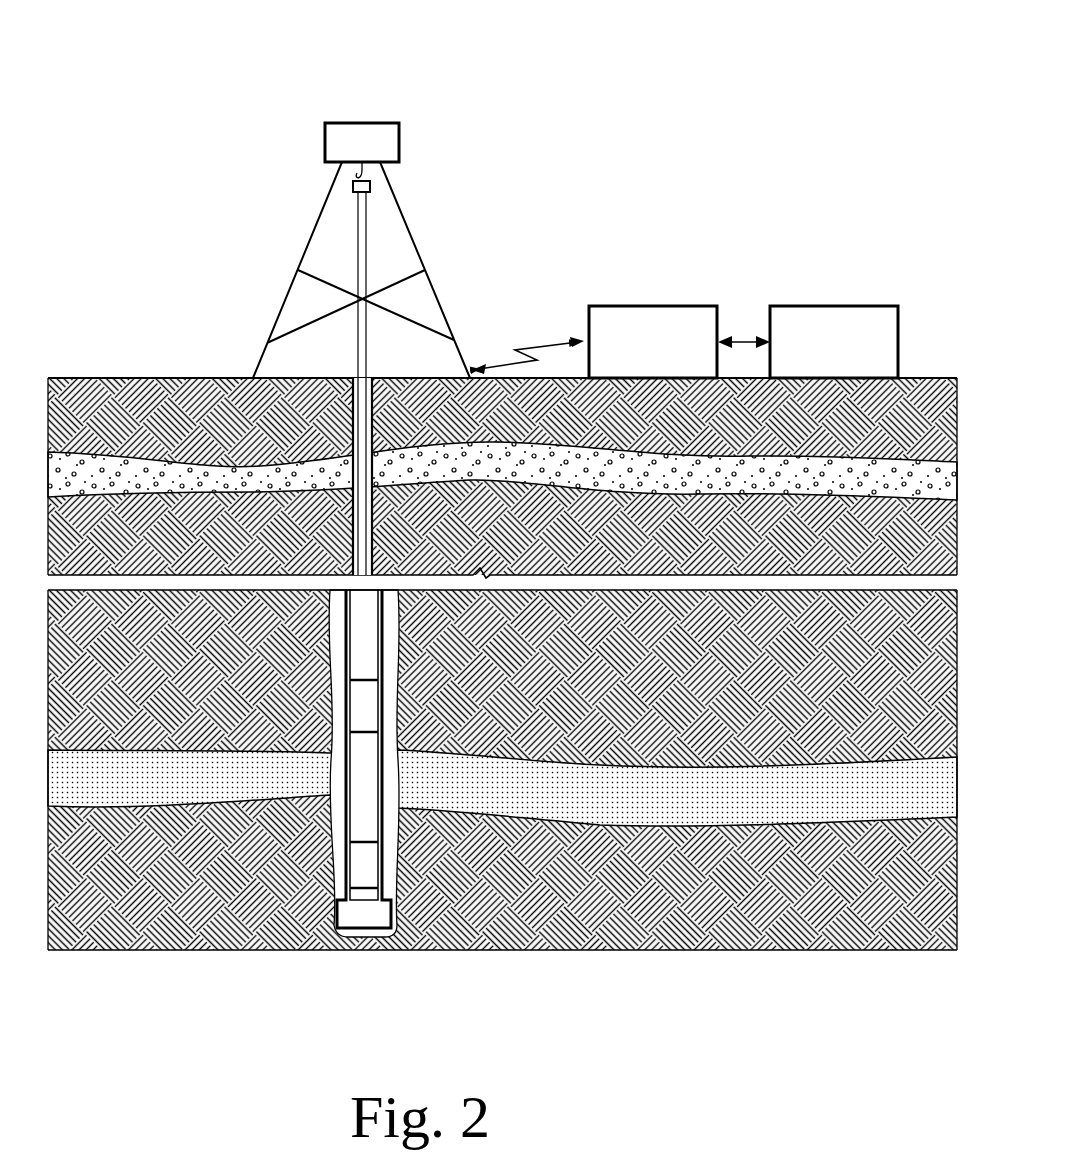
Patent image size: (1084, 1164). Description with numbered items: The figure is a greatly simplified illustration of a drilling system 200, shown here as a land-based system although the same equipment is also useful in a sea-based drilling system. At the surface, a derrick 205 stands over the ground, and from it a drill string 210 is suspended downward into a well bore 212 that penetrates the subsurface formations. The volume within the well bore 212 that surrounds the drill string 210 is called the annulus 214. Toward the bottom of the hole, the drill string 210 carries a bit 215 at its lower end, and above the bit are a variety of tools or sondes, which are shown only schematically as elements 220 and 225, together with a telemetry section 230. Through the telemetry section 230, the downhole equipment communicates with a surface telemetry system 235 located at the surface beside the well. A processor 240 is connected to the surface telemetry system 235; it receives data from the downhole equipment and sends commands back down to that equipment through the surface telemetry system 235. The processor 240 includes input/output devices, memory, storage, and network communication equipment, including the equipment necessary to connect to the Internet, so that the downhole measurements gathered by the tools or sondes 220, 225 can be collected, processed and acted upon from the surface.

The drilling system 200 is at (677, 47).
The derrick 205 is at (373, 123).
The drill string 210 is at (367, 250).
The well bore 212 is at (376, 378).
The annulus 214 is at (392, 712).
The bit 215 is at (358, 913).
The tool or sonde 220 is at (345, 867).
The tool or sonde 225 is at (383, 825).
The telemetry section 230 is at (345, 707).
The surface telemetry system 235 is at (645, 306).
The processor 240 is at (862, 306).